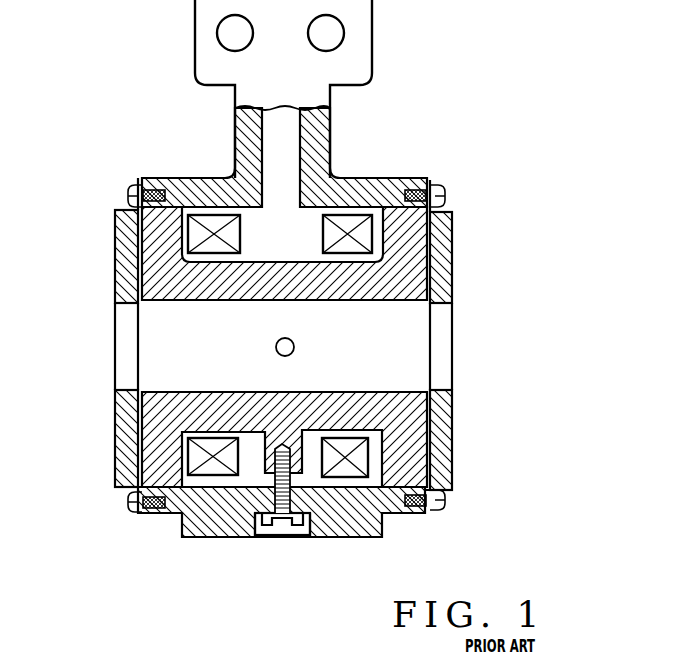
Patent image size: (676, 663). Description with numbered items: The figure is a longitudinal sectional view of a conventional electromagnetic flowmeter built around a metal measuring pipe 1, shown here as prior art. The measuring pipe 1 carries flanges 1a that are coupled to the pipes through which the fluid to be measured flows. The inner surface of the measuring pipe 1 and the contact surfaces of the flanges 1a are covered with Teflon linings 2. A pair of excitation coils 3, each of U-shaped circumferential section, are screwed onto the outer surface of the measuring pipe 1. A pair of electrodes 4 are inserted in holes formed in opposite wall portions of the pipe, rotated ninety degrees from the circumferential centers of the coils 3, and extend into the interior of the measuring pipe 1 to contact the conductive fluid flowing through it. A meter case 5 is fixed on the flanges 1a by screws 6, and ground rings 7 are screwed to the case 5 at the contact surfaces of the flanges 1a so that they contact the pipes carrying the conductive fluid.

The measuring pipe 1 is at (447, 241).
The flanges 1a is at (167, 230).
The Teflon (PTFE) linings 2 is at (393, 307).
The excitation coils 3 is at (356, 216).
The electrodes 4 is at (276, 347).
The meter case 5 is at (342, 516).
The screws 6 is at (270, 530).
The ground rings 7 is at (115, 263).